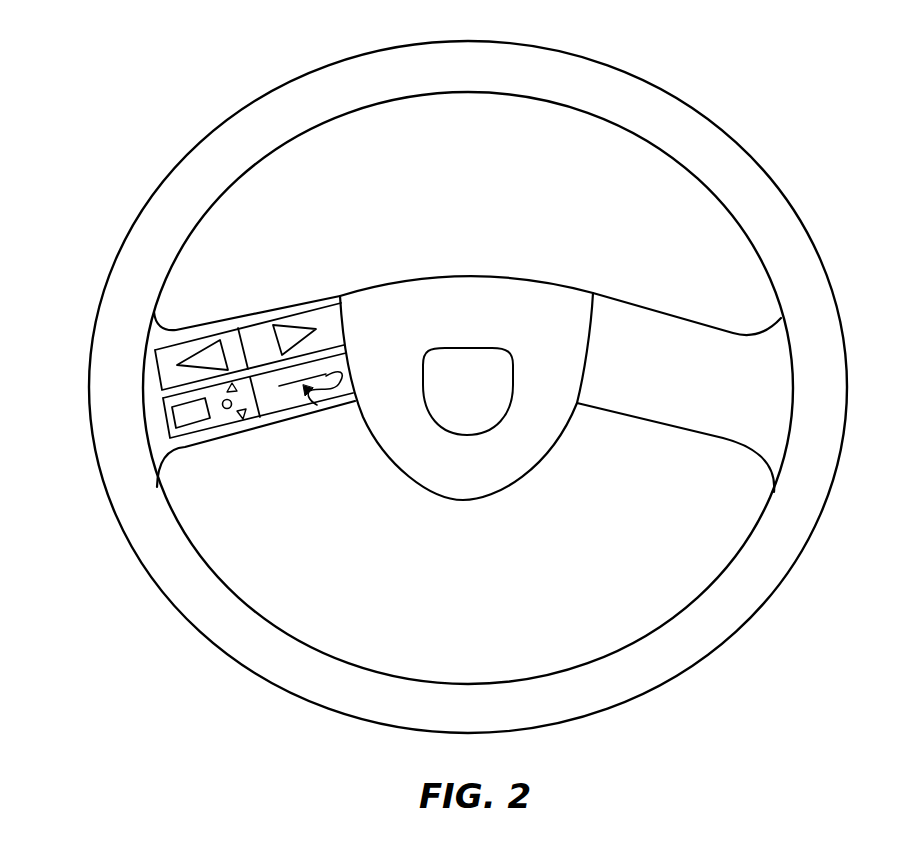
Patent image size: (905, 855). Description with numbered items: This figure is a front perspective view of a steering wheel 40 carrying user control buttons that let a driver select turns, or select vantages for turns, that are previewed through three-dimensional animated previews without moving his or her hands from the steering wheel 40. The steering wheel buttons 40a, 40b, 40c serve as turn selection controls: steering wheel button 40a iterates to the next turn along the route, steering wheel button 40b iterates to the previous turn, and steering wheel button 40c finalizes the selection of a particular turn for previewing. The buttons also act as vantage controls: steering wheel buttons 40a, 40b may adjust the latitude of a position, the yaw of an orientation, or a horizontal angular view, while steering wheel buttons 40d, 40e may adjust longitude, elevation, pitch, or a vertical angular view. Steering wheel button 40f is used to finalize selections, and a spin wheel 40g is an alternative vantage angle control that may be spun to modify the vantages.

The steering wheel 40 is at (636, 76).
The steering wheel button 40a is at (290, 323).
The steering wheel button 40b is at (207, 346).
The steering wheel button 40c is at (328, 398).
The steering wheel button 40d is at (229, 389).
The steering wheel button 40e is at (241, 418).
The steering wheel button 40f is at (222, 405).
The spin wheel 40g is at (188, 424).